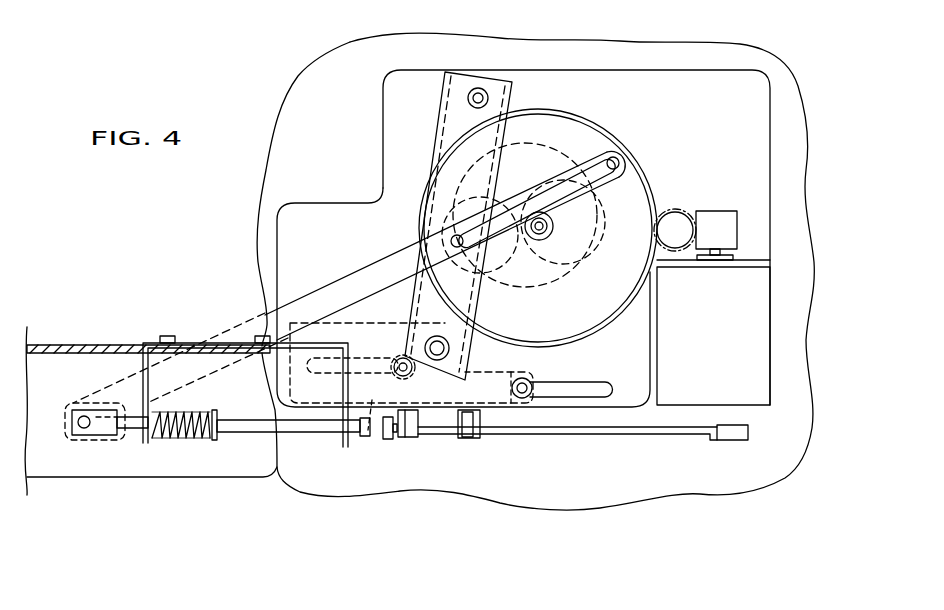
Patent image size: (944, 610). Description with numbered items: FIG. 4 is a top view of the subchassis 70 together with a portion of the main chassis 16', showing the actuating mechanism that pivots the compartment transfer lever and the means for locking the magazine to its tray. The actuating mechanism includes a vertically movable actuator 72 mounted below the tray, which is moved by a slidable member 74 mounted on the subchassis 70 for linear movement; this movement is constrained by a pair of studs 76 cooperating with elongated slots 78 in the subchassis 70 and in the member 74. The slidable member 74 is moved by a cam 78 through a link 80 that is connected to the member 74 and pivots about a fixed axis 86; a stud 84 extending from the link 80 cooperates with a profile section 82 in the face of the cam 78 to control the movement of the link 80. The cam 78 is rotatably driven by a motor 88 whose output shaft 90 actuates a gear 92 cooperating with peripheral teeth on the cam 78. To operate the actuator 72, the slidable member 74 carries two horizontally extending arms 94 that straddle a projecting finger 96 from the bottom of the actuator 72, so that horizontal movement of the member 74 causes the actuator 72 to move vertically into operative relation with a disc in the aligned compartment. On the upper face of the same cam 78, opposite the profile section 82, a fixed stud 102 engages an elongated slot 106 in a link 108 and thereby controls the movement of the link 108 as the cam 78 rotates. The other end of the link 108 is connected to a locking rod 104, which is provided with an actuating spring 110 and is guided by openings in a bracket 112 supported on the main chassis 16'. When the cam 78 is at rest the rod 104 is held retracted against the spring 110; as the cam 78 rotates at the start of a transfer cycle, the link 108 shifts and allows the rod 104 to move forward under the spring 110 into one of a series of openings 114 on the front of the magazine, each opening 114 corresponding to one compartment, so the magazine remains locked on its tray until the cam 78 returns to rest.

The main chassis 16' is at (151, 400).
The subchassis 70 is at (693, 88).
The actuator 72 is at (664, 435).
The slidable member 74 is at (511, 403).
The studs 76 is at (407, 370).
The cam 78 is at (640, 190).
The link 80 is at (462, 113).
The profile section 82 is at (566, 283).
The stud 84 is at (426, 190).
The fixed axis 86 is at (480, 88).
The motor 88 is at (757, 378).
The output shaft 90 is at (722, 216).
The gear 92 is at (668, 200).
The horizontally extending arms 94 is at (463, 441).
The projecting finger 96 is at (444, 403).
The fixed stud 102 is at (450, 241).
The locking rod 104 is at (298, 447).
The elongated slot 106 is at (614, 160).
The link 108 is at (338, 293).
The actuating spring 110 is at (185, 436).
The bracket 112 is at (136, 372).
The openings 114 is at (387, 441).